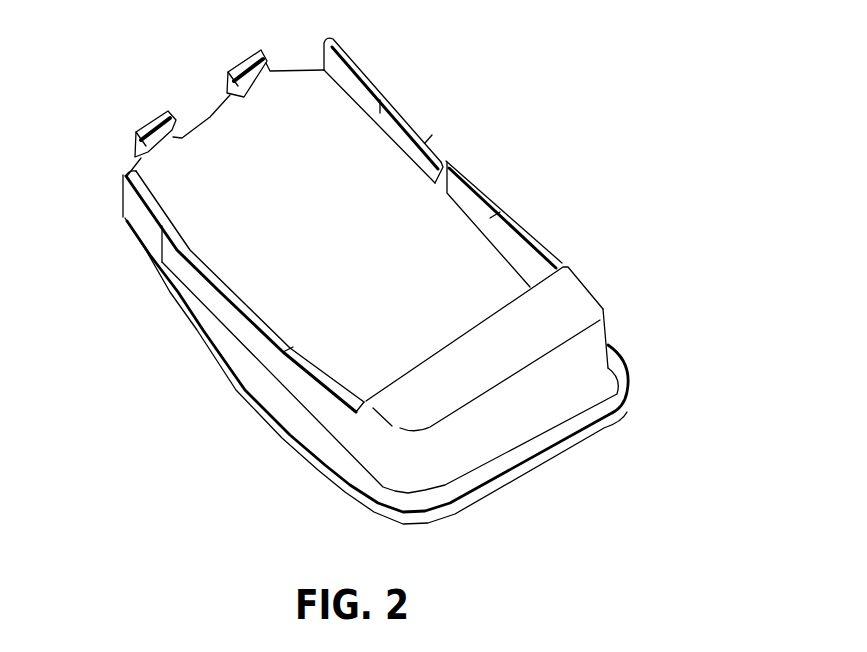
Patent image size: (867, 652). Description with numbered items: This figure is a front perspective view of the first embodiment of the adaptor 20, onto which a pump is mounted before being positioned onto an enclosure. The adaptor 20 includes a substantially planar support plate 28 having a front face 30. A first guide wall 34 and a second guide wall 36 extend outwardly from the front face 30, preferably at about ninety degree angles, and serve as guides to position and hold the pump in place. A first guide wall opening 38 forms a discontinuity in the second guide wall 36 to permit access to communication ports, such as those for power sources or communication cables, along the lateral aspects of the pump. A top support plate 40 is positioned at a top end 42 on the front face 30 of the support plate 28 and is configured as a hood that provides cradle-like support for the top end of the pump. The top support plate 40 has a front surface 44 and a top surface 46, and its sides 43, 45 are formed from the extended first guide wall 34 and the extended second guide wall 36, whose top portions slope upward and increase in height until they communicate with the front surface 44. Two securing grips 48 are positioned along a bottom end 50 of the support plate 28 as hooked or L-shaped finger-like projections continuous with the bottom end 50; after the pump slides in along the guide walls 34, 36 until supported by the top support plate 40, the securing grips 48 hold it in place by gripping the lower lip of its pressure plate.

The adaptor 20 is at (541, 158).
The support plate 28 is at (219, 330).
The front face 30 is at (183, 198).
The first guide wall 34 is at (150, 215).
The second guide wall 36 is at (406, 107).
The first guide wall opening 38 is at (446, 165).
The top support plate 40 is at (417, 371).
The top end 42 is at (376, 371).
The side of top support plate 43 is at (373, 440).
The front surface 44 is at (573, 310).
The side of top support plate 45 is at (609, 335).
The top surface 46 is at (555, 403).
The securing grips 48 is at (236, 67).
The bottom end 50 is at (210, 117).